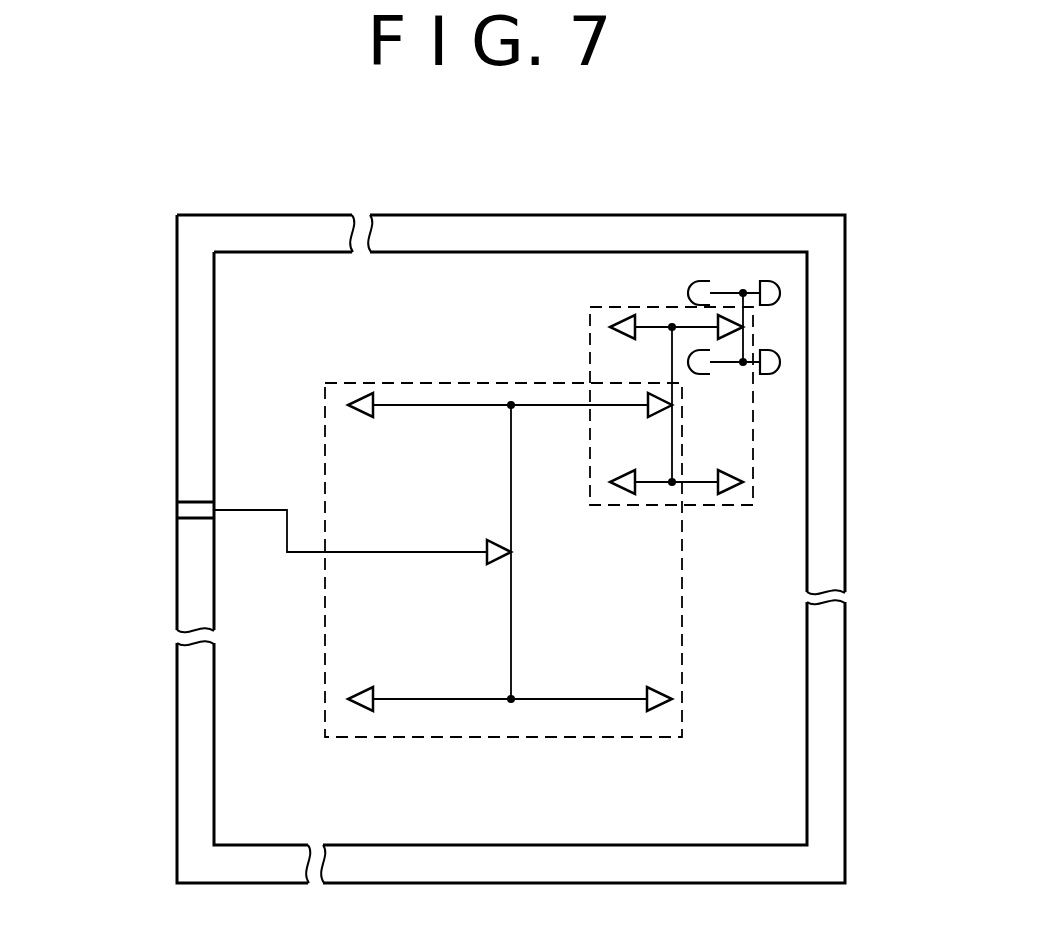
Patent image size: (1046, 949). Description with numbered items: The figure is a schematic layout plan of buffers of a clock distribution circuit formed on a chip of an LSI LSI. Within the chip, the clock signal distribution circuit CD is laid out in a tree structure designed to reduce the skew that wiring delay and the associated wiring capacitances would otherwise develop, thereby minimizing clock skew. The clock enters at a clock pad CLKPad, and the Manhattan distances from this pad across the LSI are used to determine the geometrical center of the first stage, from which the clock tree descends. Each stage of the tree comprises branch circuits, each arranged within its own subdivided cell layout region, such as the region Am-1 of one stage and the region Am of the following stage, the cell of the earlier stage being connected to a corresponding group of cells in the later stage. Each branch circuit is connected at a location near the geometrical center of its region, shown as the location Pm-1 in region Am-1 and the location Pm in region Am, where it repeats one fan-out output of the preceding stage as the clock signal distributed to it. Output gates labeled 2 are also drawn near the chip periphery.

The output buffer / driver gate 2 is at (697, 282).
The element LSI is at (784, 208).
The clock signal distribution circuit CD is at (332, 346).
The clock pad CLKPad is at (188, 510).
The subdivided cell layout region Am is at (629, 446).
The subdivided cell layout region Am-1 is at (453, 590).
The location Pm is at (668, 408).
The location Pm-1 is at (508, 556).